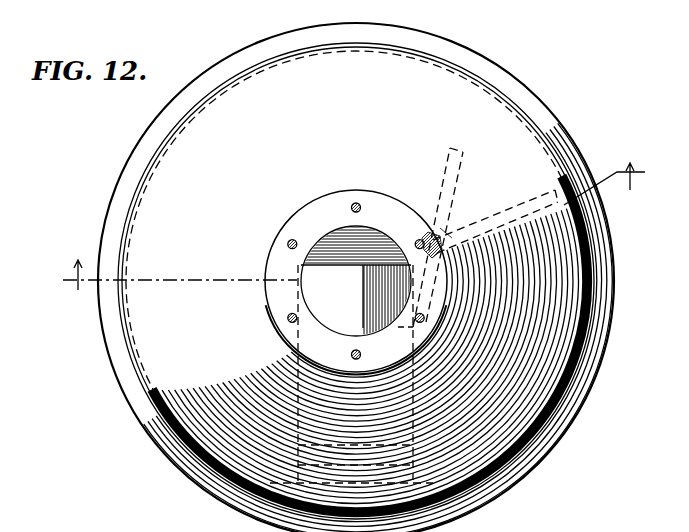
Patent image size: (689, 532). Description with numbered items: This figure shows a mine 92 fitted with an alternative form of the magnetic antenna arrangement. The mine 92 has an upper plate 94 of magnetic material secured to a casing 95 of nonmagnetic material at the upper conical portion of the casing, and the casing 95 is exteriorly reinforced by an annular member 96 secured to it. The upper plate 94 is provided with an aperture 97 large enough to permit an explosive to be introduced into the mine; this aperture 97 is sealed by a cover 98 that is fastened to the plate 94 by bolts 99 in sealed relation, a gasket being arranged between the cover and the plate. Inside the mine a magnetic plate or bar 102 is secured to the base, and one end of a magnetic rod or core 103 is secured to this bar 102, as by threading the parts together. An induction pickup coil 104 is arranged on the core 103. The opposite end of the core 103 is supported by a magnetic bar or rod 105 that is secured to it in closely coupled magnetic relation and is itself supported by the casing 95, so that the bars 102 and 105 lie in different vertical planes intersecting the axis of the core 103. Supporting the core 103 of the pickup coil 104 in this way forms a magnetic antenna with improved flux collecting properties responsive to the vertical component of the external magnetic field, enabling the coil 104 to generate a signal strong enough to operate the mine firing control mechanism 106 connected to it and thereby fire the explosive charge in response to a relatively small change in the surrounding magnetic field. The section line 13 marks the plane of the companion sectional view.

The section line 13- 13 is at (354, 215).
The mine 92 is at (140, 187).
The upper plate 94 is at (273, 260).
The casing 95 is at (550, 150).
The annular member 96 is at (138, 399).
The aperture 97 is at (325, 323).
The cover 98 is at (370, 370).
The bolts 99 is at (351, 206).
The magnetic plate or bar 102 is at (445, 165).
The magnetic rod or core 103 is at (445, 233).
The induction pickup coil 104 is at (427, 230).
The magnetic bar or rod 105 is at (530, 200).
The mine firing control mechanism 106 is at (370, 320).